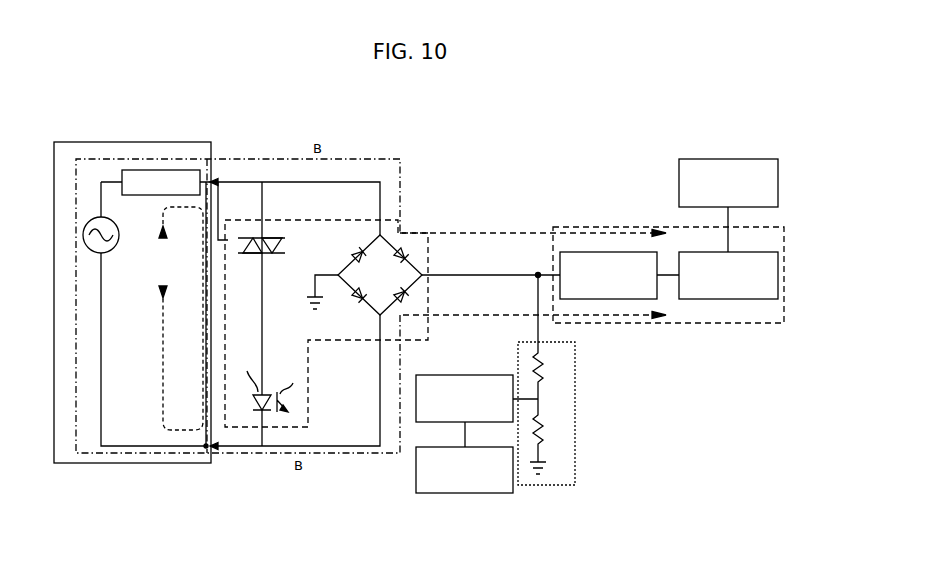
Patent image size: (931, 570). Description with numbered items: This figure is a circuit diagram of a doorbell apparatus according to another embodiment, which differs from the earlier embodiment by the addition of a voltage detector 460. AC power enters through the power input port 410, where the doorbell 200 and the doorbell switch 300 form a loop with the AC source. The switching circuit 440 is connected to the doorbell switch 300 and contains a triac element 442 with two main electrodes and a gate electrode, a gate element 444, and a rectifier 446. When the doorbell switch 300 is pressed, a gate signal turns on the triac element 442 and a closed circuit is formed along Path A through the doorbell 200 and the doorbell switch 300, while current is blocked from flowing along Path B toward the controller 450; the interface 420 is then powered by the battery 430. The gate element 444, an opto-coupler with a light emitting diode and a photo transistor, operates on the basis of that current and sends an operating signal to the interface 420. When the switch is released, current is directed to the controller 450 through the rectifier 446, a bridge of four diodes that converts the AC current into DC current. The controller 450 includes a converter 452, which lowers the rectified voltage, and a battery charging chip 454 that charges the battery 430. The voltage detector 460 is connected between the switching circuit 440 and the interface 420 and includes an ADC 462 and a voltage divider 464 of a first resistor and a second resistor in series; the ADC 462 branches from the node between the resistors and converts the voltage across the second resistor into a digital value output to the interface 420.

The doorbell 200 is at (170, 170).
The doorbell switch 300 is at (224, 208).
The power input port 410 is at (143, 464).
The interface 420 is at (465, 494).
The battery 430 is at (728, 158).
The switching circuit 440 is at (412, 216).
The triac element 442 is at (289, 234).
The gate element 444 is at (268, 392).
The rectifier 446 is at (413, 257).
The controller 450 is at (786, 312).
The converter 452 is at (607, 300).
The battery charging chip 454 is at (727, 300).
The voltage detector 460 is at (504, 405).
The ADC 462 is at (450, 375).
The voltage divider 464 is at (526, 413).